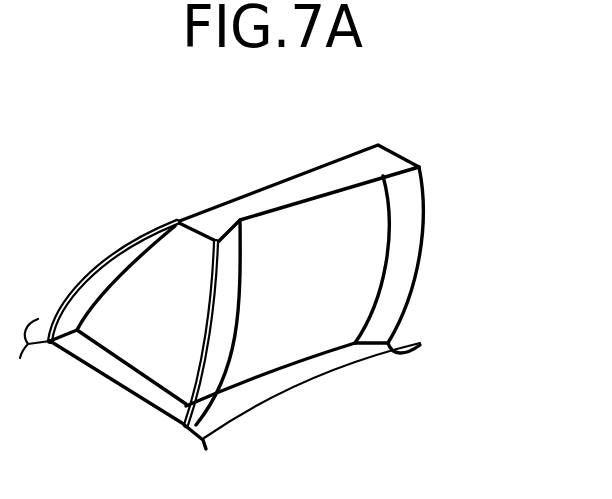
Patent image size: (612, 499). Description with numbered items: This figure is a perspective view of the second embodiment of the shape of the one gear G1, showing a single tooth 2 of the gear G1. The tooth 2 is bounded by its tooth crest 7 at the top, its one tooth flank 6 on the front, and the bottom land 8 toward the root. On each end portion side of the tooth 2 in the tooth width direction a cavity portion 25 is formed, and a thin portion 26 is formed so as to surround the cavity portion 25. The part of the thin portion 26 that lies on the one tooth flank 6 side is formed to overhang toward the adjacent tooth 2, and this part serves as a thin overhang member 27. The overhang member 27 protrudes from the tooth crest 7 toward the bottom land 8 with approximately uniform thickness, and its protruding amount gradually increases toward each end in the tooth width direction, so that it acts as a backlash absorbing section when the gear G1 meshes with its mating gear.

The tooth 2 is at (272, 281).
The tooth flank 6 is at (312, 304).
The tooth crest 7 is at (331, 180).
The bottom land 8 is at (247, 398).
The cavity portion 25 is at (155, 302).
The thin portion 26 is at (132, 238).
The thin overhang member 27 is at (228, 327).
The gear G1 is at (272, 283).